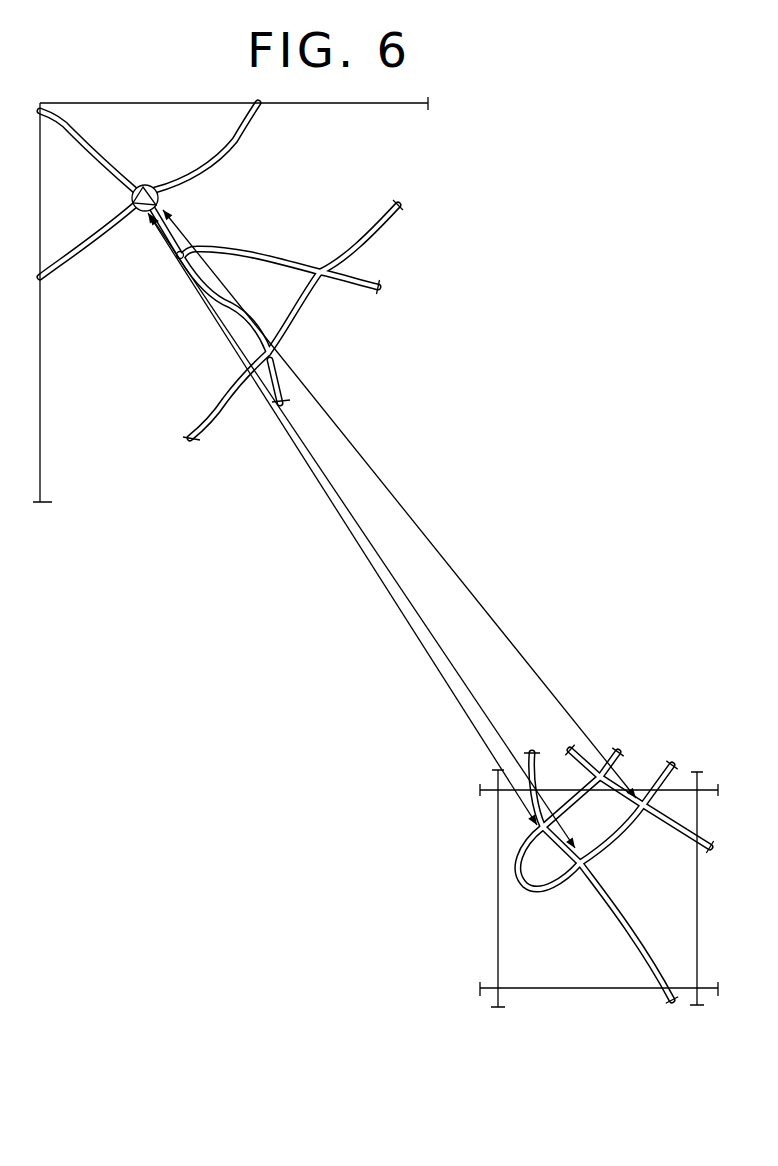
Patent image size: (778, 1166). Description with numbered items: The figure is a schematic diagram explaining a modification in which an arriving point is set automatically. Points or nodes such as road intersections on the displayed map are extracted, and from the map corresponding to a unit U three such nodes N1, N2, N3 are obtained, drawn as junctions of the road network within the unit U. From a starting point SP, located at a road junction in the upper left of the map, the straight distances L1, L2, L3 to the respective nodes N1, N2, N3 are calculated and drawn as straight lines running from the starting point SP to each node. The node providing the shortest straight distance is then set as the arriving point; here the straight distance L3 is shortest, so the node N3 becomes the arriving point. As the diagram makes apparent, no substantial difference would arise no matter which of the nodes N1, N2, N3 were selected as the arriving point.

The starting point SP is at (160, 200).
The straight distance L1 is at (399, 504).
The straight distance L2 is at (362, 531).
The straight distance L3 is at (342, 519).
The node N1 is at (646, 812).
The node N2 is at (590, 865).
The node N3 is at (536, 831).
The unit U is at (513, 921).